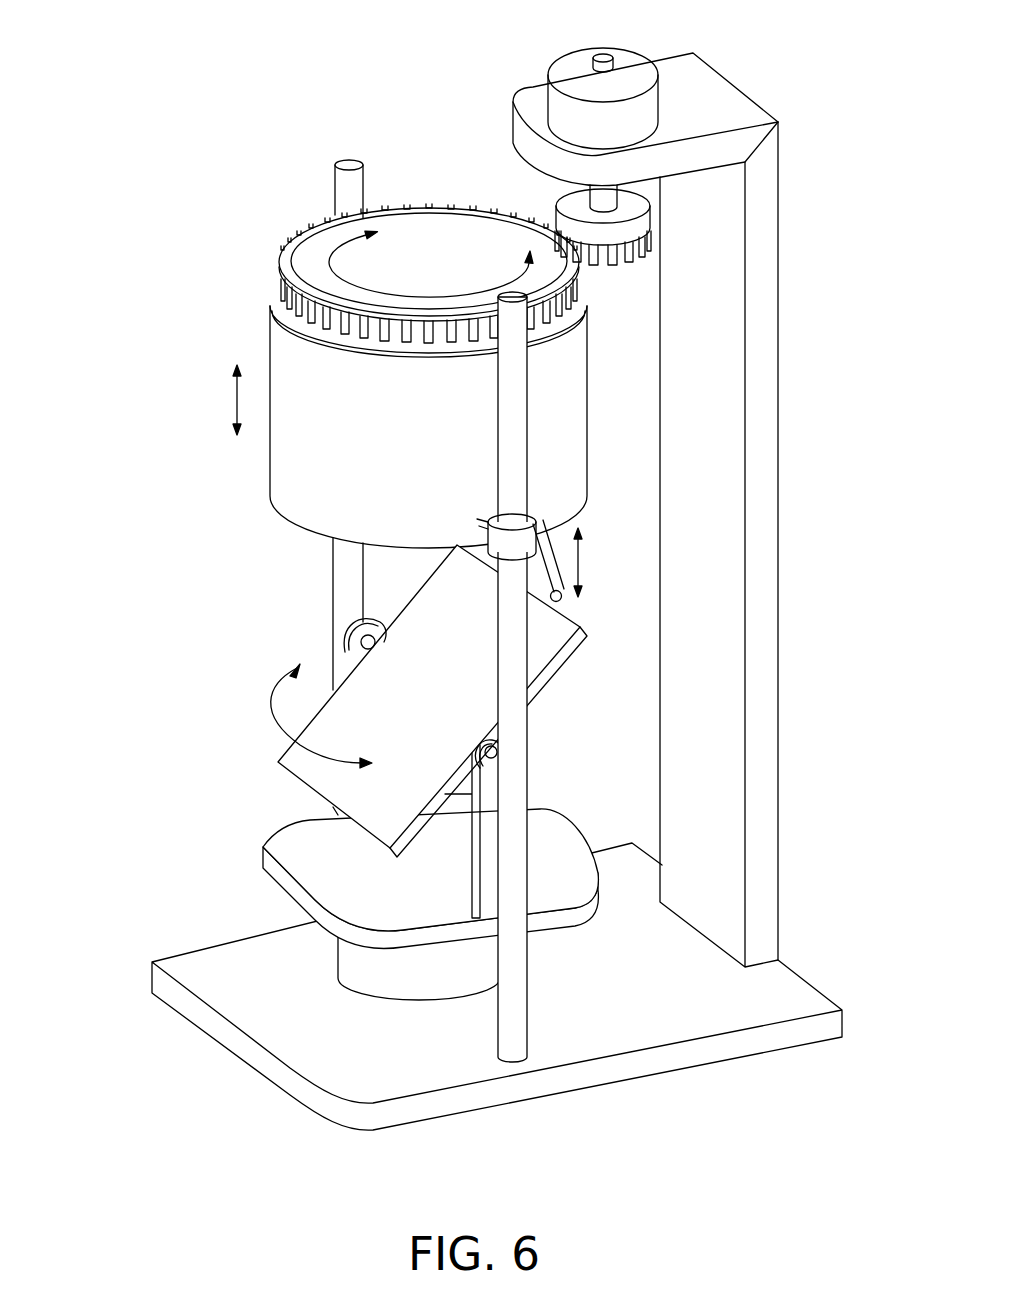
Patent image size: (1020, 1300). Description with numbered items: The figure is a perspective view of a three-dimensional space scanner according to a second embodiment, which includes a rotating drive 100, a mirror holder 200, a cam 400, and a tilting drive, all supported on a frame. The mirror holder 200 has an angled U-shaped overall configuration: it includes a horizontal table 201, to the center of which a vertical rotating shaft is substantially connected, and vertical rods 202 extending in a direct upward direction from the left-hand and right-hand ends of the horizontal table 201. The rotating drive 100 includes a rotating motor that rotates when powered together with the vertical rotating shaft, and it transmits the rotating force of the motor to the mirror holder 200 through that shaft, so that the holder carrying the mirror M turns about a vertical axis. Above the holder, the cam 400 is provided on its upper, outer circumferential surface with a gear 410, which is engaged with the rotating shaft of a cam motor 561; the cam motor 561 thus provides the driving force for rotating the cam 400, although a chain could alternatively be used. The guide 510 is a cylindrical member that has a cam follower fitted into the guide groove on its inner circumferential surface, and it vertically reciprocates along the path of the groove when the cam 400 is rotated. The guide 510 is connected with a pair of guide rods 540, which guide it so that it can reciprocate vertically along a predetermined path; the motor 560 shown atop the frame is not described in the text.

The rotating drive 100 is at (258, 972).
The mirror holder 200 is at (258, 865).
The horizontal table 201 is at (363, 910).
The vertical rods 202 is at (476, 900).
The cam 400 is at (316, 258).
The gear 410 is at (423, 207).
The guide 510 is at (282, 352).
The guide rods 540 is at (520, 413).
The motor 560 is at (628, 55).
The cam motor 561 is at (642, 221).
The plate M is at (366, 683).